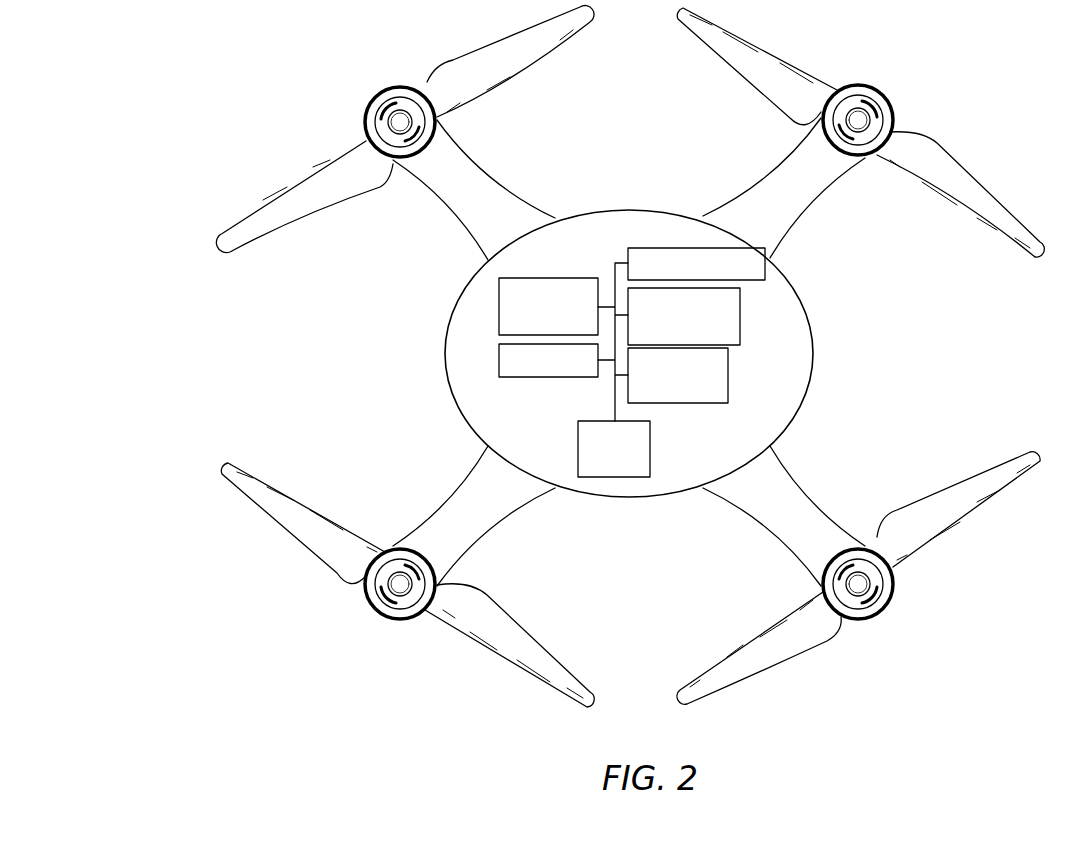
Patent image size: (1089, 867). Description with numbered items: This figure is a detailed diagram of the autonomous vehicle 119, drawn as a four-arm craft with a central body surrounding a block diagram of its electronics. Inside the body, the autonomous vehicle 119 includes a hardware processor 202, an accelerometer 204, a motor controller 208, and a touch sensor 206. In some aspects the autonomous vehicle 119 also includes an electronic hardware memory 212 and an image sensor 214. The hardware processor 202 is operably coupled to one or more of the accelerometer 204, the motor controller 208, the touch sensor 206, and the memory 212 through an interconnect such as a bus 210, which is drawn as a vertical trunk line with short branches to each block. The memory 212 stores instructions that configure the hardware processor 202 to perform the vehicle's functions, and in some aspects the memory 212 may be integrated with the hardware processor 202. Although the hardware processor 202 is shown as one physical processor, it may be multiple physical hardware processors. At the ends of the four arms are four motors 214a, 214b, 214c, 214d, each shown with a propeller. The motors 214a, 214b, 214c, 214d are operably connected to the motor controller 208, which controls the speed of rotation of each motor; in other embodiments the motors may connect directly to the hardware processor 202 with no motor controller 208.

The autonomous vehicle 119 is at (201, 76).
The hardware processor 202 is at (499, 307).
The accelerometer 204 is at (697, 248).
The touch sensor 206 is at (728, 373).
The motor controller 208 is at (740, 315).
The bus 210 is at (622, 262).
The electronic hardware memory 212 is at (523, 377).
The image sensor 214 is at (650, 460).
The motor 214a is at (398, 118).
The motor 214b is at (860, 118).
The motor 214c is at (861, 590).
The motor 214d is at (398, 590).